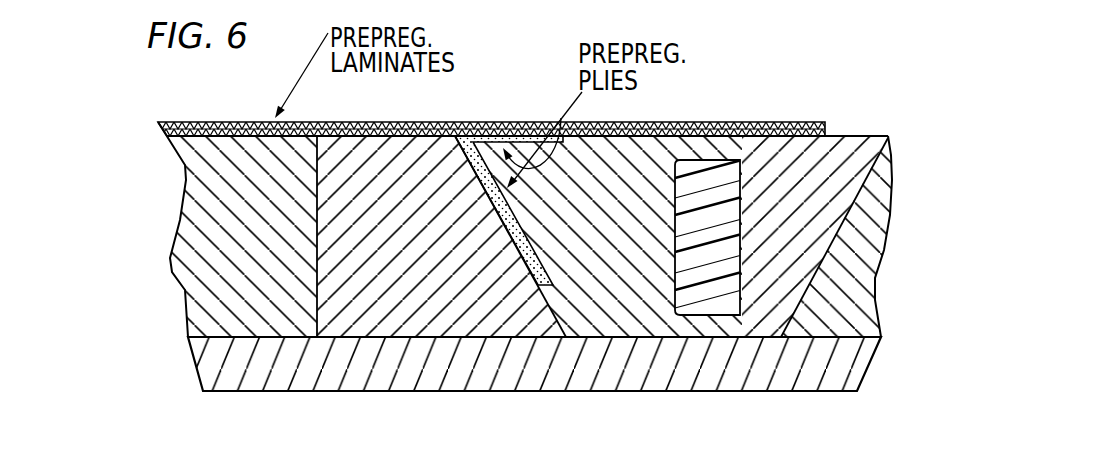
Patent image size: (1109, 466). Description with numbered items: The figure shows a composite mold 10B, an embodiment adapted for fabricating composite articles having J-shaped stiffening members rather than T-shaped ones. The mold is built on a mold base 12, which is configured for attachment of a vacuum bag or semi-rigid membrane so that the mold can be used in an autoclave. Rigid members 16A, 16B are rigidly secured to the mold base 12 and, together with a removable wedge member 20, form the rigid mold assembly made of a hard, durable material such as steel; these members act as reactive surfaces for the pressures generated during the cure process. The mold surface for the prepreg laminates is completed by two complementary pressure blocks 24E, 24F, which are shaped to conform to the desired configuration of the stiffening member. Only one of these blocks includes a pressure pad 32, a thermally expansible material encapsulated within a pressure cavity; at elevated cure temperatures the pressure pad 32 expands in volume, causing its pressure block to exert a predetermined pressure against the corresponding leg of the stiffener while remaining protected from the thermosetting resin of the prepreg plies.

The composite mold 10B is at (752, 88).
The mold base 12 is at (277, 368).
The rigid member 16A is at (860, 260).
The rigid member 16B is at (225, 283).
The removable wedge member 20 is at (830, 155).
The complementary pressure block 24E is at (633, 312).
The complementary pressure block 24F is at (399, 301).
The pressure pad 32 is at (707, 285).